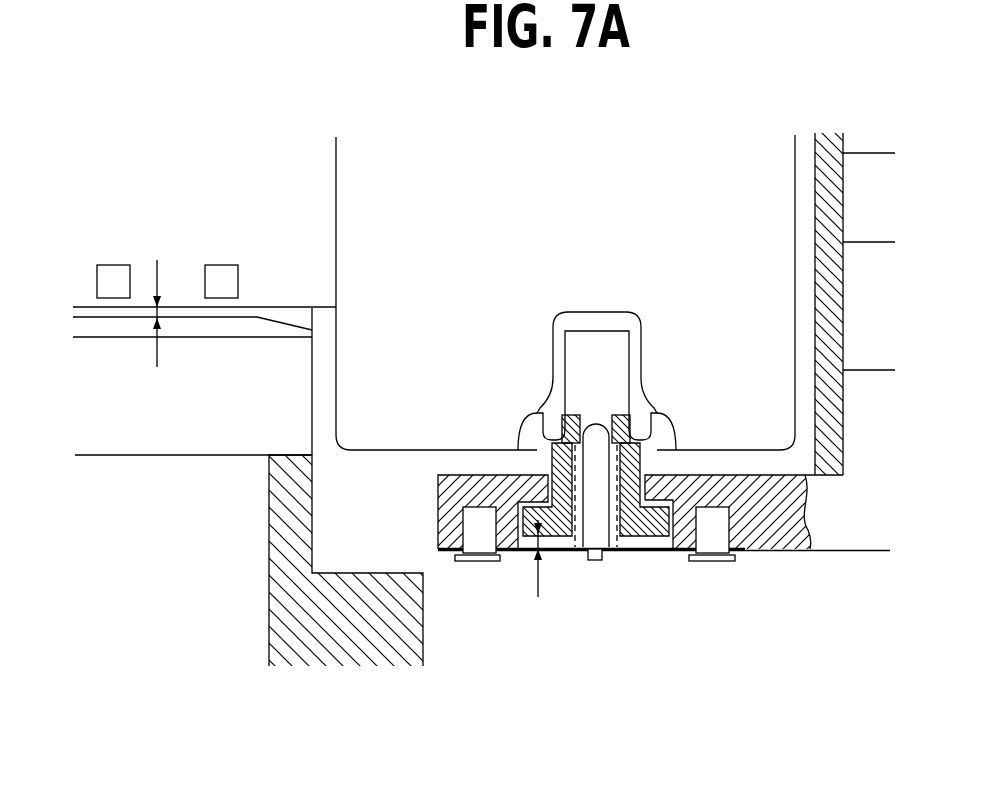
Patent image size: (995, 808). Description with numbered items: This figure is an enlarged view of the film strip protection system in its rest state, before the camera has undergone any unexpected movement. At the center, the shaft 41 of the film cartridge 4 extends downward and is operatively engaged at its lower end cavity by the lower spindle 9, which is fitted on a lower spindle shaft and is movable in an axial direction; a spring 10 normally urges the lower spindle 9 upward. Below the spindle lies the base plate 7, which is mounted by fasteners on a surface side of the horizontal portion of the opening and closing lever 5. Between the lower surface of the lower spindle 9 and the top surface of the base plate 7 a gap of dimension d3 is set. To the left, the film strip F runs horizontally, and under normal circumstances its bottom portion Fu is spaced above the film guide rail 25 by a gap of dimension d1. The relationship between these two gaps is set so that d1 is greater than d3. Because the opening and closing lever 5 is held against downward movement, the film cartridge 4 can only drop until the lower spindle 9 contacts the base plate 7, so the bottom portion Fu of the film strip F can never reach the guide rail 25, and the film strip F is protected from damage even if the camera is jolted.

The film strip F is at (258, 170).
The bottom portion of film strip Fu is at (296, 309).
The film cartridge 4 is at (582, 170).
The shaft of film cartridge 41 is at (608, 322).
The film guide rail 25 is at (207, 330).
The gap dimension between film bottom portion and guide rail d1 is at (173, 311).
The gap dimension between lower spindle and base plate d3 is at (523, 562).
The opening and closing lever 5 is at (848, 528).
The base plate 7 is at (658, 553).
The lower spindle 9 is at (632, 522).
The spring 10 is at (607, 525).